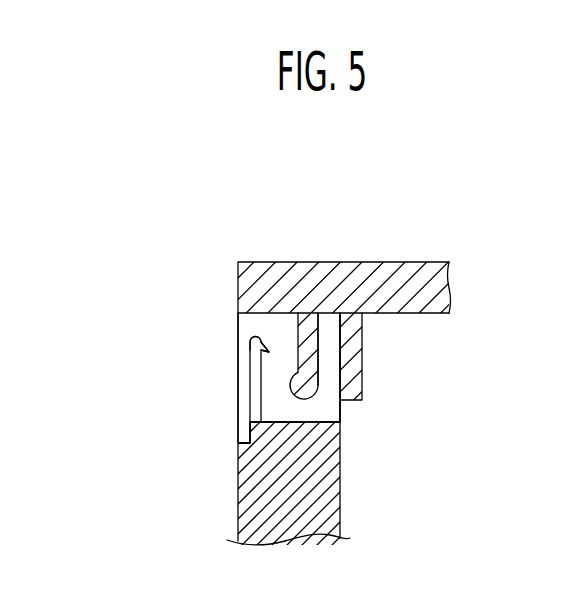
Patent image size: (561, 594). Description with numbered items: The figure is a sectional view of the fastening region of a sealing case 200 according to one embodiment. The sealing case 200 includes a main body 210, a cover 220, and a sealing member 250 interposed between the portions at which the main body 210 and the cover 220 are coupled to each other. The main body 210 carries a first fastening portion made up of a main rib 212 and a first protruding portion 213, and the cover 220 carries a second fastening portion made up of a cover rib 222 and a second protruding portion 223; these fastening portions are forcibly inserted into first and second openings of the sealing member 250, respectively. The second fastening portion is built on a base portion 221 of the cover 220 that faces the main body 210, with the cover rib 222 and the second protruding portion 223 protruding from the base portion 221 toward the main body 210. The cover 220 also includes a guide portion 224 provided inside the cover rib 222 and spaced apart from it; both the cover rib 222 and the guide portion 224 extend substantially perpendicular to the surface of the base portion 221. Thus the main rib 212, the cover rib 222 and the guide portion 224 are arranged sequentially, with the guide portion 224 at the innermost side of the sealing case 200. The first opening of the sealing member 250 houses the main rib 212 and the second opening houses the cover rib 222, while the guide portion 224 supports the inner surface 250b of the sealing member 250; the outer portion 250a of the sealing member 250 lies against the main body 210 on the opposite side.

The sealing case 200 is at (455, 151).
The main body 210 is at (364, 472).
The main rib 212 is at (252, 387).
The first protruding portion 213 is at (269, 337).
The cover 220 is at (421, 240).
The base portion 221 is at (314, 272).
The cover rib 222 is at (304, 337).
The second protruding portion 223 is at (303, 398).
The guide portion 224 is at (353, 359).
The sealing member 250 is at (118, 318).
The first portion of fixing member 250a is at (215, 346).
The inner surface 250b is at (354, 412).